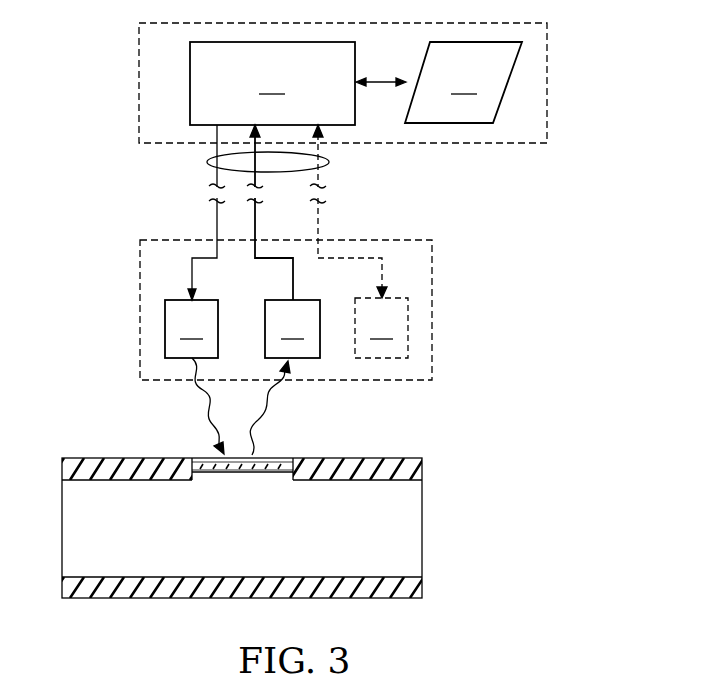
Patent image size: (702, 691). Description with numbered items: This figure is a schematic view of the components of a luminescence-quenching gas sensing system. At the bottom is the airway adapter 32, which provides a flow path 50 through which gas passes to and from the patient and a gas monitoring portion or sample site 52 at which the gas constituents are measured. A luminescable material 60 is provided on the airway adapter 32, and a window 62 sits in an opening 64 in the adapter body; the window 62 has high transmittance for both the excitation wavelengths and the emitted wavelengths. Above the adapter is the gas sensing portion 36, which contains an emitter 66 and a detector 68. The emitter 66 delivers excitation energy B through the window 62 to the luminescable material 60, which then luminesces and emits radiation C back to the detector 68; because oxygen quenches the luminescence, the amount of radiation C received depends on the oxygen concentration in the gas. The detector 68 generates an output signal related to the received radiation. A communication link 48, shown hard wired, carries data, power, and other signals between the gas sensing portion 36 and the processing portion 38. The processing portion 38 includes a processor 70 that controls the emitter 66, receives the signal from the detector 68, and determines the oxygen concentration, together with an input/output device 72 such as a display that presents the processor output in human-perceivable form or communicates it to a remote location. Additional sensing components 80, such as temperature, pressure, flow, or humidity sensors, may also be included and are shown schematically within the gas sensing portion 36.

The airway adapter 32 is at (422, 565).
The gas sensing portion 36 is at (432, 305).
The processing portion 38 is at (546, 86).
The communication link 48 is at (208, 162).
The flow path 50 is at (98, 516).
The gas monitoring portion 52 is at (202, 528).
The luminescable material 60 is at (275, 474).
The window 62 is at (202, 460).
The opening 64 is at (282, 460).
The emitter 66 is at (191, 329).
The detector 68 is at (292, 329).
The processor 70 is at (272, 83).
The input/output device 72 is at (463, 82).
The additional sensing components 80 is at (381, 328).
The excitation energy B is at (203, 390).
The emitted radiation C is at (278, 412).